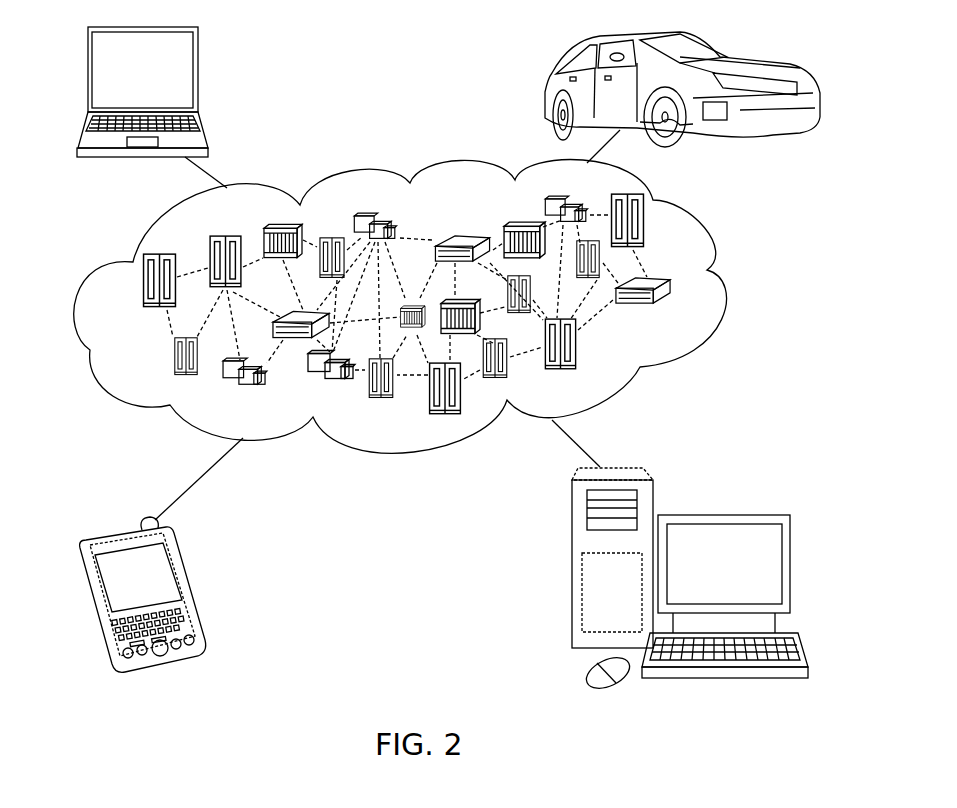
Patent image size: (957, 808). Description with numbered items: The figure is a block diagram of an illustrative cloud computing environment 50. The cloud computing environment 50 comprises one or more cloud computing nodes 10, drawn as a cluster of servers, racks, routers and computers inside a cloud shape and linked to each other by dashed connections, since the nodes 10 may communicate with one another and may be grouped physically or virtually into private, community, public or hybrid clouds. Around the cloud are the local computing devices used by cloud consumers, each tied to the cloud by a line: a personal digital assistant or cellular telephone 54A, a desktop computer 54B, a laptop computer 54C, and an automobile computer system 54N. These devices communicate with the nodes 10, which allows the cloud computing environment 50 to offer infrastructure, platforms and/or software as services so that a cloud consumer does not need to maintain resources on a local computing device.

The cloud computing node 10 is at (680, 315).
The cloud computing environment 50 is at (420, 307).
The personal digital assistant or cellular telephone 54A is at (188, 588).
The desktop computer 54B is at (723, 512).
The laptop computer 54C is at (198, 76).
The automobile computer system 54N is at (545, 88).